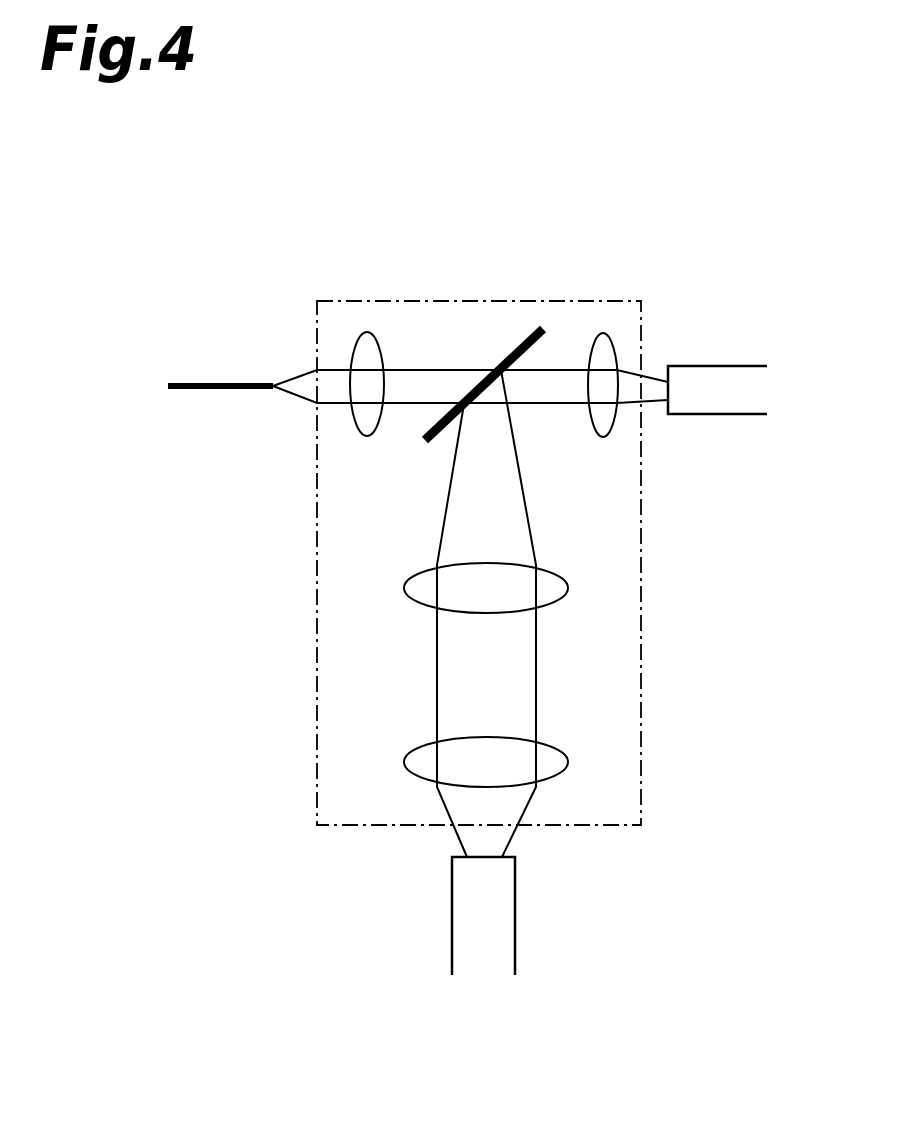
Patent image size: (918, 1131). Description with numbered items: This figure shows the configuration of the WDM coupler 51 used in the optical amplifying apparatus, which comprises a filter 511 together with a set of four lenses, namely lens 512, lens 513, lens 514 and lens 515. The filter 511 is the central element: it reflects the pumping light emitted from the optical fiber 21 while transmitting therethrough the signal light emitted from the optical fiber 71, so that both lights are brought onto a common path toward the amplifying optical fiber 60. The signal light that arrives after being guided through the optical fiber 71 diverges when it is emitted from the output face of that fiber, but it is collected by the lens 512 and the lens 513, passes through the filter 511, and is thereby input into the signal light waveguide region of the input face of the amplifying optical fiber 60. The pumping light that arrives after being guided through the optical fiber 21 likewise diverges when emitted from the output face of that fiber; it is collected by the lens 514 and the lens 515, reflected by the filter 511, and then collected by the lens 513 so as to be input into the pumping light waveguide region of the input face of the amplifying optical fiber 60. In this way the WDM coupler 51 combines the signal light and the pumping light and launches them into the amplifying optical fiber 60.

The WDM coupler 51 is at (316, 650).
The optical fiber 71 is at (214, 384).
The lens 512 is at (369, 332).
The filter 511 is at (521, 330).
The lens 513 is at (605, 333).
The amplifying optical fiber 60 is at (725, 366).
The lens 515 is at (568, 590).
The lens 514 is at (568, 760).
The optical fiber 21 is at (452, 917).